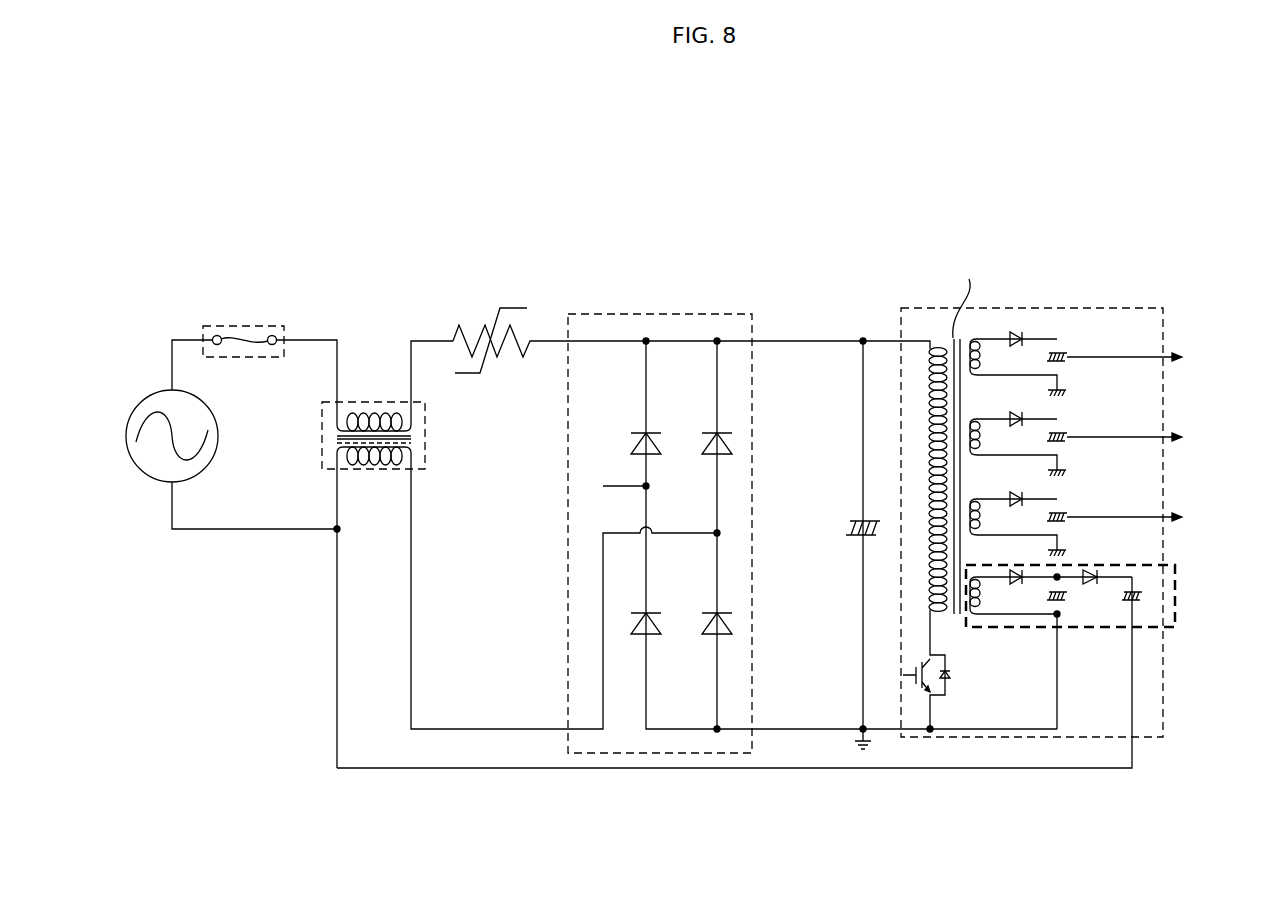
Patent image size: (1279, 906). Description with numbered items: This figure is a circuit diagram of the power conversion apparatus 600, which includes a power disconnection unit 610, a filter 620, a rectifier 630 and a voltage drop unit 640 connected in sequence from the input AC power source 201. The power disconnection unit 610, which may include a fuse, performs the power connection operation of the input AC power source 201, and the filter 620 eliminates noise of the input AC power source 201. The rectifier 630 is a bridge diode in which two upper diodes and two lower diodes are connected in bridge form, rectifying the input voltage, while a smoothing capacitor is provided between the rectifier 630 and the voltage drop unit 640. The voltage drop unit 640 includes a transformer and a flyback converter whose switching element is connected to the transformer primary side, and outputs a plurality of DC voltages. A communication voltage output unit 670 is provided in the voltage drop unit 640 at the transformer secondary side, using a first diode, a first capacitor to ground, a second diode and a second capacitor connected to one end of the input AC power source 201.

The power conversion apparatus 600 is at (295, 228).
The input AC power source 201 is at (138, 402).
The power disconnection unit 610 is at (270, 325).
The filter 620 is at (373, 402).
The rectifier 630 is at (740, 314).
The voltage drop unit 640 is at (1085, 308).
The communication voltage output unit 670 is at (1178, 592).